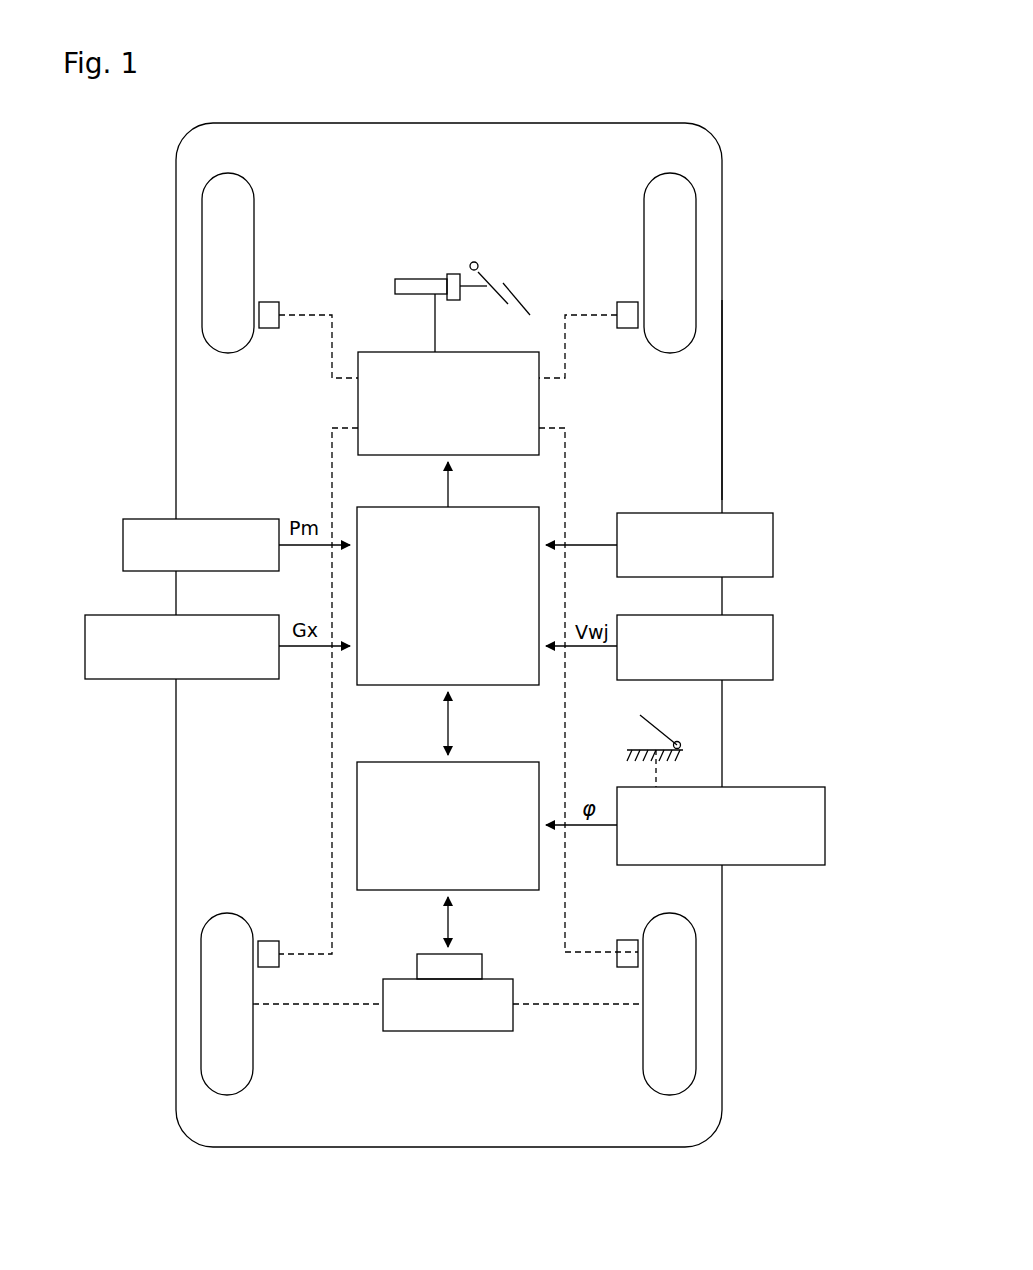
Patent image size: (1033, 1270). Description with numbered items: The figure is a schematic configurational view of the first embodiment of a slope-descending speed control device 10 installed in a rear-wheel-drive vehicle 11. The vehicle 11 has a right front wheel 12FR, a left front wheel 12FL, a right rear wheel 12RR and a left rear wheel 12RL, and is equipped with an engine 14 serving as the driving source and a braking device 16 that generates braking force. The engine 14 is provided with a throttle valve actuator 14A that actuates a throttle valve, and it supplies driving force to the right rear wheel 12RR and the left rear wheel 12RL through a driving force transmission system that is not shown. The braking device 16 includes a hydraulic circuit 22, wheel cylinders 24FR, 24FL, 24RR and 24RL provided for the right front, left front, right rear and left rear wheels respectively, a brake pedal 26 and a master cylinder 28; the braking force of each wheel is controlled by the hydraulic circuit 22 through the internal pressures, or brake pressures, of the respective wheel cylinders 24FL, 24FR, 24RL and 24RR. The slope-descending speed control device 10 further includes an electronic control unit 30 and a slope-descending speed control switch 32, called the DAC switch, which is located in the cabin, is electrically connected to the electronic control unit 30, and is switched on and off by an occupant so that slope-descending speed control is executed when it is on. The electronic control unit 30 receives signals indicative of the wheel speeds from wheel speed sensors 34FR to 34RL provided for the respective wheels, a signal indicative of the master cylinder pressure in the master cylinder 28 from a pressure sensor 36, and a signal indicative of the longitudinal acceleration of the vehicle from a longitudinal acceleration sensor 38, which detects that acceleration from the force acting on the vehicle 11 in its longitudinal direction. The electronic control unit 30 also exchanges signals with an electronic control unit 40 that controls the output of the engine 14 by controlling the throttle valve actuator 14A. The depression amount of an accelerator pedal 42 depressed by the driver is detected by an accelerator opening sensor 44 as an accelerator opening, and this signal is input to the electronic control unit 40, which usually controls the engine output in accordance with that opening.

The slope-descending speed control device 10 is at (629, 110).
The vehicle 11 is at (722, 226).
The left front wheel 12FL is at (204, 278).
The right front wheel 12FR is at (697, 272).
The left rear wheel 12RL is at (202, 1013).
The right rear wheel 12RR is at (696, 1012).
The engine 14 is at (450, 1031).
The throttle valve actuator 14A is at (467, 952).
The braking device 16 is at (456, 282).
The hydraulic circuit 22 is at (436, 440).
The left front wheel cylinder 24FL is at (269, 328).
The right front wheel cylinder 24FR is at (627, 328).
The left rear wheel cylinder 24RL is at (269, 941).
The right rear wheel cylinder 24RR is at (626, 940).
The brake pedal 26 is at (512, 293).
The master cylinder 28 is at (412, 295).
The electronic control unit 30 is at (436, 651).
The slope-descending speed control switch 32 is at (773, 530).
The wheel speed sensor 34FR is at (796, 613).
The wheel speed sensor 34RL is at (736, 634).
The pressure sensor 36 is at (123, 545).
The longitudinal acceleration sensor 38 is at (85, 645).
The electronic control unit 40 is at (436, 881).
The accelerator pedal 42 is at (648, 722).
The accelerator opening sensor 44 is at (825, 812).